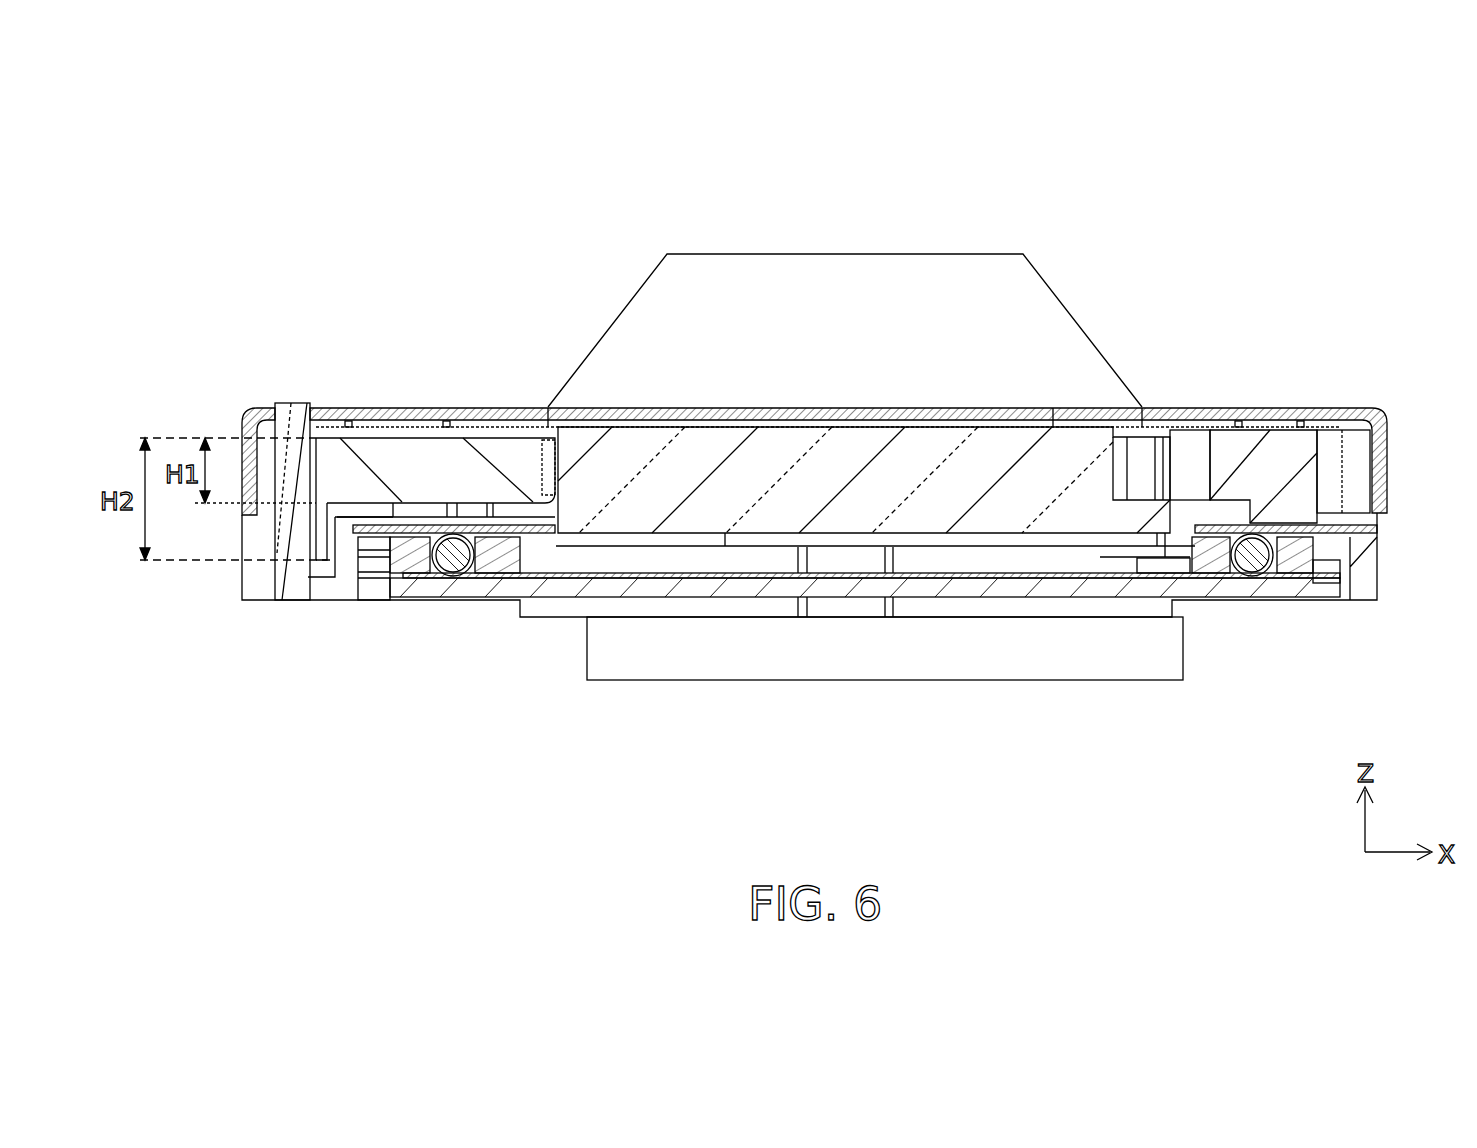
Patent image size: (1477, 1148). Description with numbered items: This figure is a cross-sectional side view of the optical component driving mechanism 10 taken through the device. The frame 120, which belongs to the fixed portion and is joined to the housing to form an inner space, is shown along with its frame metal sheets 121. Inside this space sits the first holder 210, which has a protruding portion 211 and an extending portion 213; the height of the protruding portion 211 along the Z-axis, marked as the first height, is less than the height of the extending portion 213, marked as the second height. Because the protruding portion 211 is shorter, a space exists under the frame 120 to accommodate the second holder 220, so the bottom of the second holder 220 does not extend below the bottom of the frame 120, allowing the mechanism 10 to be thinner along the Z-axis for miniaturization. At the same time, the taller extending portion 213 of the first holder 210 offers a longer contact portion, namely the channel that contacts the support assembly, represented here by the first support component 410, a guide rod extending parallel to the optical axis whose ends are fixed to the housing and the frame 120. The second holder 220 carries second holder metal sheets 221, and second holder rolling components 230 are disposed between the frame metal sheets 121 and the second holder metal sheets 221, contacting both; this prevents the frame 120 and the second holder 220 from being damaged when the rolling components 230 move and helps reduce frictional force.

The optical component driving mechanism 10 is at (250, 108).
The frame 120 is at (257, 590).
The frame metal sheet 121 is at (538, 534).
The first holder 210 is at (456, 448).
The protruding portion 211 is at (388, 452).
The extending portion 213 is at (309, 565).
The second holder 220 is at (407, 572).
The second holder metal sheet 221 is at (525, 587).
The second holder rolling component 230 is at (452, 562).
The first support component 410 is at (291, 410).